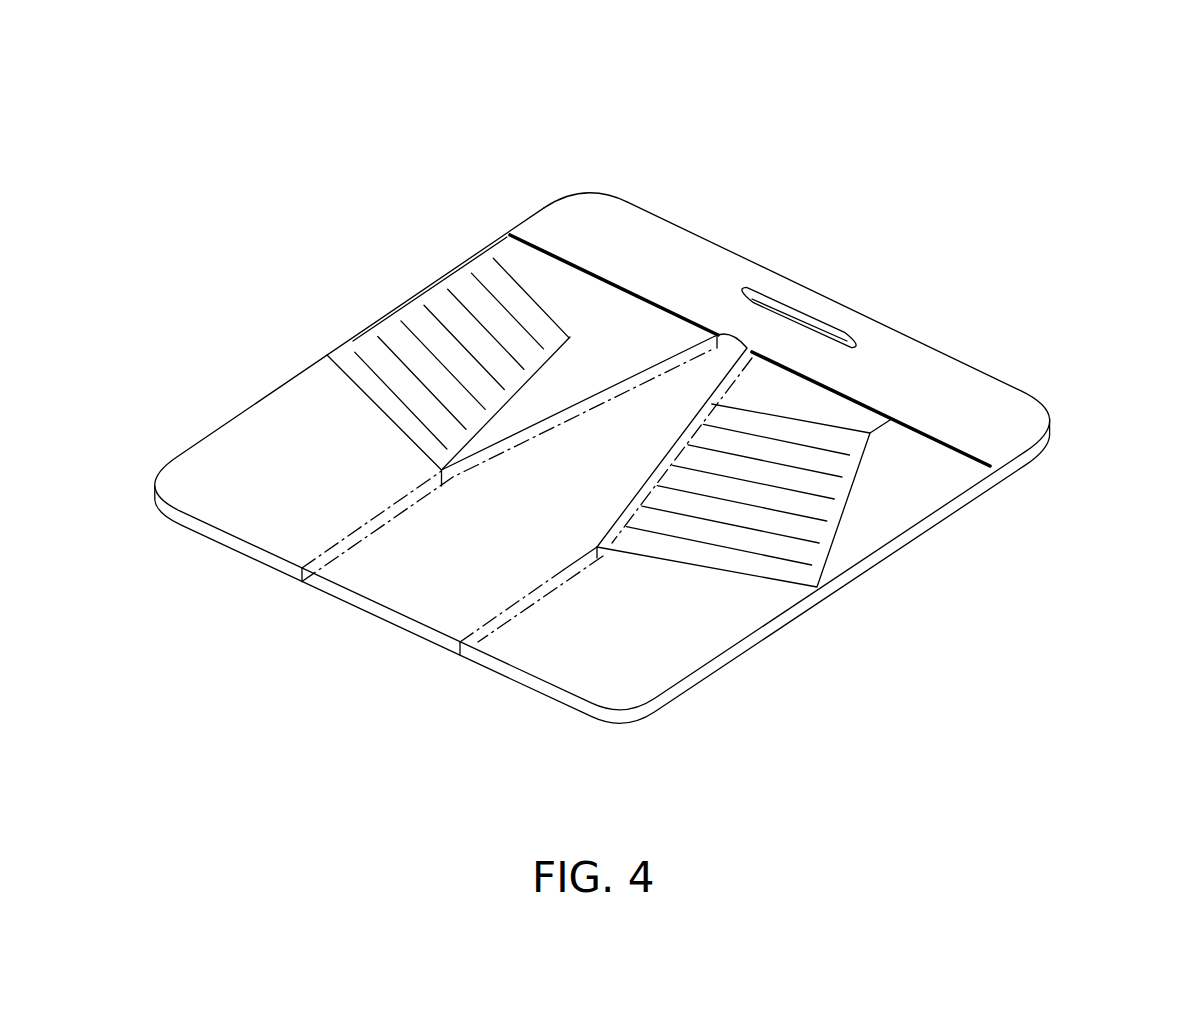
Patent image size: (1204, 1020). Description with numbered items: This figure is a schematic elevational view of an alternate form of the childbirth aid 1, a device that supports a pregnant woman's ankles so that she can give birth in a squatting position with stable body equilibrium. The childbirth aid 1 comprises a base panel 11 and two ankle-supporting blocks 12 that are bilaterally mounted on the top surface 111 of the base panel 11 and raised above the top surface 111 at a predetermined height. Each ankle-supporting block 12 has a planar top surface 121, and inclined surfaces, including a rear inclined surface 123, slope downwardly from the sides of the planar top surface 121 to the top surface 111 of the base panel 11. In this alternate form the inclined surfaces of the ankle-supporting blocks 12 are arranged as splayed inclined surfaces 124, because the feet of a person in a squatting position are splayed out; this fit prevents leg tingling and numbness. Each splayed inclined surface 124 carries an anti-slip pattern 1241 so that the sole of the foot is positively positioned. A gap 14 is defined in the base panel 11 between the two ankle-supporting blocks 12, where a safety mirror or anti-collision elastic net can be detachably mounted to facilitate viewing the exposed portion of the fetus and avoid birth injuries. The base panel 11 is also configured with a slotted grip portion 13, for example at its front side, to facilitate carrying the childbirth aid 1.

The childbirth aid 1 is at (928, 283).
The base panel 11 is at (687, 232).
The top surface 111 is at (585, 213).
The ankle-supporting block 12 is at (493, 252).
The planar top surface 121 is at (537, 268).
The rear inclined surface 123 is at (663, 310).
The splayed inclined surface 124 is at (440, 297).
The anti-slip pattern 1241 is at (415, 338).
The slotted grip portion 13 is at (787, 308).
The gap 14 is at (410, 598).